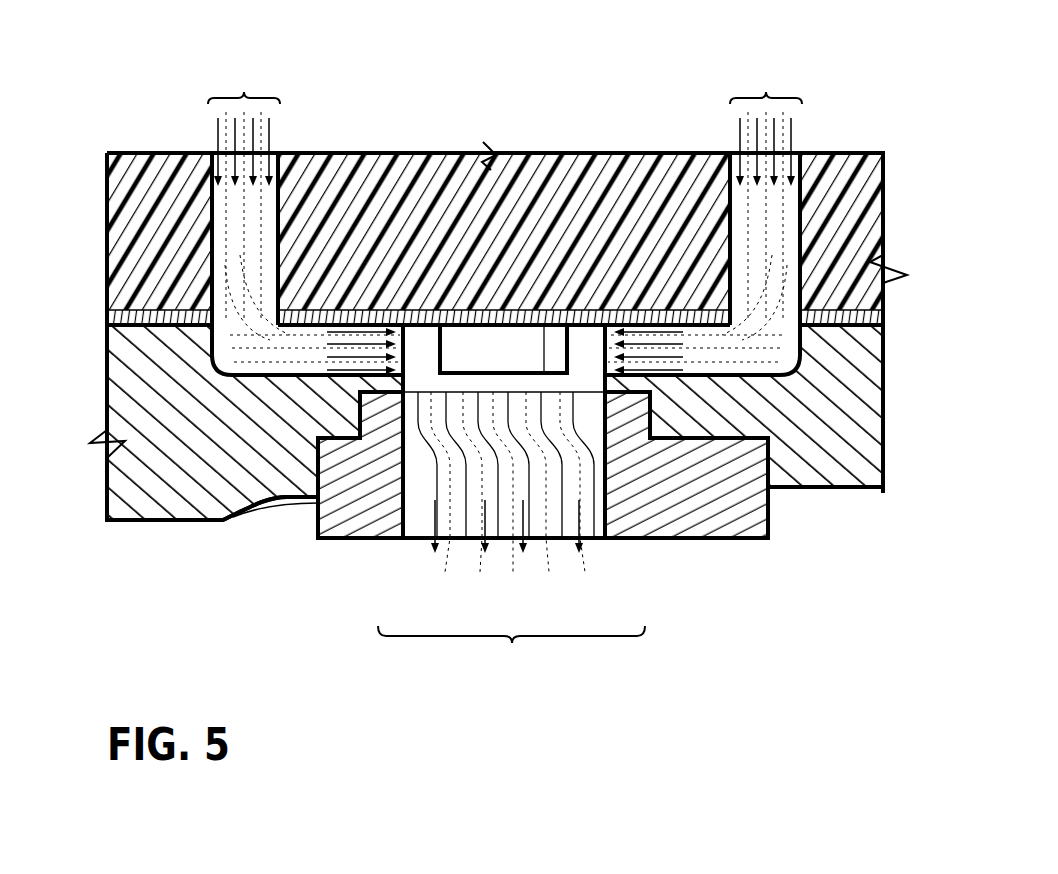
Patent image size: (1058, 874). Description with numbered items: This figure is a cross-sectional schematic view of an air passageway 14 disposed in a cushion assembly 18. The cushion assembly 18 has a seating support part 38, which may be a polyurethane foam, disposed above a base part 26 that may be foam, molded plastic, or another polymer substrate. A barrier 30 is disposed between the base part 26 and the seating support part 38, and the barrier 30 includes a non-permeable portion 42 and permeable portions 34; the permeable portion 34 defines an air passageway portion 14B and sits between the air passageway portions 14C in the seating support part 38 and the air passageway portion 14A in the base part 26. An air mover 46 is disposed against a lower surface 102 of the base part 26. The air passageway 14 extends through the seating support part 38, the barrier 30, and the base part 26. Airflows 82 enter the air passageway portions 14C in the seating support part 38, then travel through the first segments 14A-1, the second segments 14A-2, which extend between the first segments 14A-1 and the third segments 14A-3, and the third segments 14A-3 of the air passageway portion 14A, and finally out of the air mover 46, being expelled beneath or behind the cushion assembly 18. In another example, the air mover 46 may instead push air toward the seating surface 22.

The air passageway 14 is at (247, 237).
The air passageway portion 14A is at (213, 378).
The first segment 14A-1 is at (253, 257).
The second segment 14A-2 is at (297, 365).
The third segment 14A-3 is at (504, 478).
The air passageway portion 14B is at (210, 347).
The air passageway portion 14C is at (283, 180).
The cushion assembly 18 is at (95, 480).
The seating surface 22 is at (440, 150).
The base part 26 is at (835, 447).
The barrier 30 is at (127, 317).
The permeable portion 34 is at (212, 300).
The seating support part 38 is at (850, 217).
The non-permeable portion 42 is at (160, 312).
The air mover 46 is at (672, 512).
The airflows 82 is at (660, 330).
The lower surface 102 is at (343, 440).